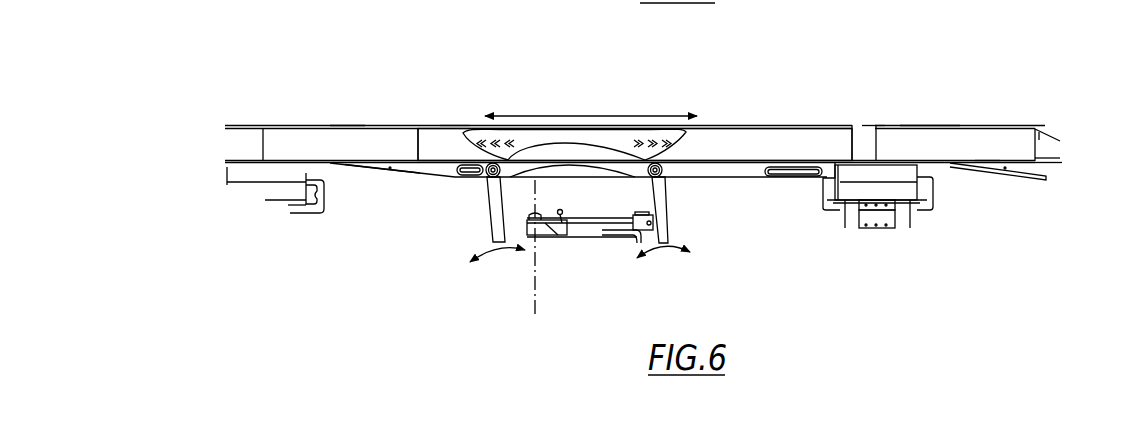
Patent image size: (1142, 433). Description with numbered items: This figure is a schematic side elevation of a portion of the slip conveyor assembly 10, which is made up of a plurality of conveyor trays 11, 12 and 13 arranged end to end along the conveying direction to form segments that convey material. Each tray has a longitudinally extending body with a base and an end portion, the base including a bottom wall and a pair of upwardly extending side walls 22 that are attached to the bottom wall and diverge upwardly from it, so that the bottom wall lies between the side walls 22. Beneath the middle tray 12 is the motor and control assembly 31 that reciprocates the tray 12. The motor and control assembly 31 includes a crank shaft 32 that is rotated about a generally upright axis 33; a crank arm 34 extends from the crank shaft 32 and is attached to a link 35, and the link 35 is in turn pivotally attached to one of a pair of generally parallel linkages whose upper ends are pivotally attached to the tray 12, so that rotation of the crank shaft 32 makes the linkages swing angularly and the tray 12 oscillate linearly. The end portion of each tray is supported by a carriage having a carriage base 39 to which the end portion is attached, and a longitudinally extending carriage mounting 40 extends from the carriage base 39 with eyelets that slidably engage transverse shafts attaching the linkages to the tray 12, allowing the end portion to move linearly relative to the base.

The slip conveyor assembly 10 is at (715, 93).
The conveyor tray 11 is at (932, 120).
The conveyor tray 12 is at (762, 125).
The conveyor tray 13 is at (227, 117).
The side walls 22 is at (771, 154).
The motor and control assembly 31 is at (588, 298).
The crank shaft 32 is at (535, 215).
The axis 33 is at (533, 287).
The crank arm 34 is at (565, 240).
The link 35 is at (603, 213).
The carriage base 39 is at (430, 178).
The carriage mounting 40 is at (740, 172).